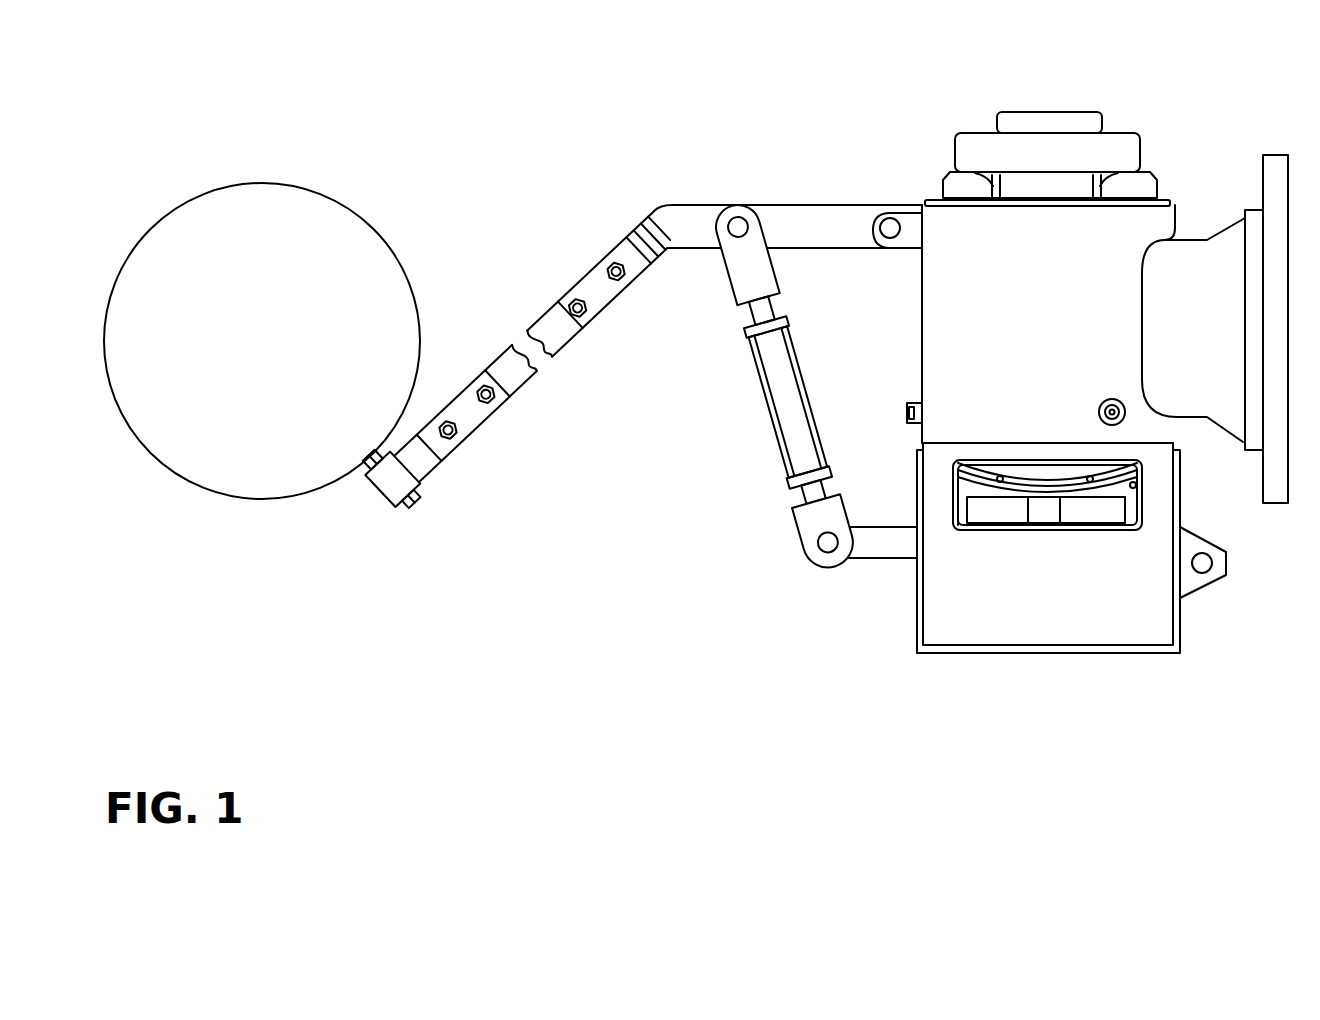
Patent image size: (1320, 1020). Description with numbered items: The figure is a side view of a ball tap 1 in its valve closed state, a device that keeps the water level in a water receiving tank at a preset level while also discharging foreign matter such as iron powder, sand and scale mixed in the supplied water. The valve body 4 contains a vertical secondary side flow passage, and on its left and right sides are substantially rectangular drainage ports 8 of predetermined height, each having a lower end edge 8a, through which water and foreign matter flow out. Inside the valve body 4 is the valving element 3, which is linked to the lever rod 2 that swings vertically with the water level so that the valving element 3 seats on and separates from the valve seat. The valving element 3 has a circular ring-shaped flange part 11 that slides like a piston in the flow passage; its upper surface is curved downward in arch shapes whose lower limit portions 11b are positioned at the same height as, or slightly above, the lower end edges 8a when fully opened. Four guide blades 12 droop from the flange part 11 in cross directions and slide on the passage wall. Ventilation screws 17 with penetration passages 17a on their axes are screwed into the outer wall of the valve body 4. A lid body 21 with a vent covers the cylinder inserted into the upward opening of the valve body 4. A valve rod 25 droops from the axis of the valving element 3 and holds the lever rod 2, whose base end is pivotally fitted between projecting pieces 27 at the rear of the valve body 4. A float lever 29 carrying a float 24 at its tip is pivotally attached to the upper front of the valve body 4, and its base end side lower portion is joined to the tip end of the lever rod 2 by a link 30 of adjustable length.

The ball tap 1 is at (1167, 232).
The lever rod 2 is at (888, 550).
The valving element 3 is at (1145, 455).
The valve body 4 is at (948, 618).
The drainage ports 8 is at (1140, 490).
The lower end edges of the drainage ports 8a is at (970, 535).
The flange part 11 is at (958, 490).
The lower limit portions 11b is at (1048, 480).
The guide blades 12 is at (975, 513).
The ventilation screws 17 is at (906, 406).
The penetration passages 17a is at (1175, 438).
The lid body 21 is at (1007, 126).
The float 24 is at (347, 247).
The valve rod 25 is at (1030, 505).
The projecting pieces 27 is at (1240, 566).
The float lever 29 is at (575, 290).
The link 30 is at (763, 378).